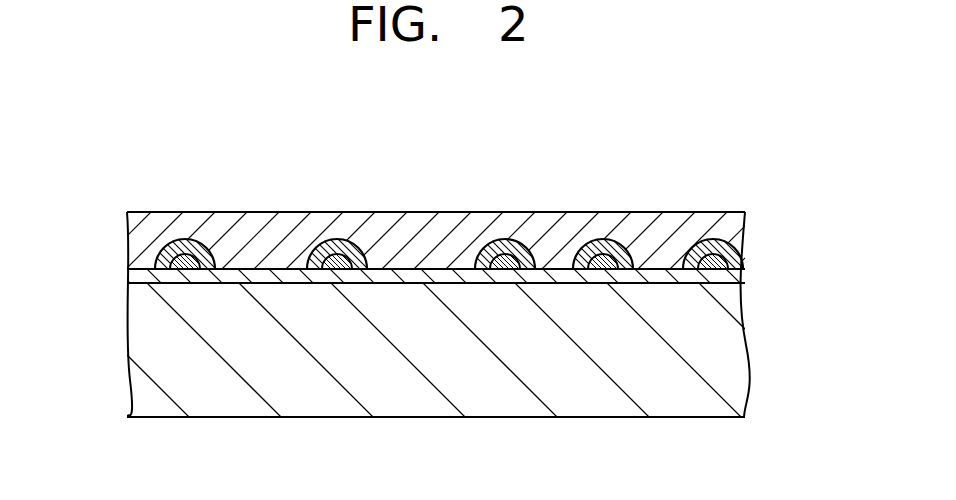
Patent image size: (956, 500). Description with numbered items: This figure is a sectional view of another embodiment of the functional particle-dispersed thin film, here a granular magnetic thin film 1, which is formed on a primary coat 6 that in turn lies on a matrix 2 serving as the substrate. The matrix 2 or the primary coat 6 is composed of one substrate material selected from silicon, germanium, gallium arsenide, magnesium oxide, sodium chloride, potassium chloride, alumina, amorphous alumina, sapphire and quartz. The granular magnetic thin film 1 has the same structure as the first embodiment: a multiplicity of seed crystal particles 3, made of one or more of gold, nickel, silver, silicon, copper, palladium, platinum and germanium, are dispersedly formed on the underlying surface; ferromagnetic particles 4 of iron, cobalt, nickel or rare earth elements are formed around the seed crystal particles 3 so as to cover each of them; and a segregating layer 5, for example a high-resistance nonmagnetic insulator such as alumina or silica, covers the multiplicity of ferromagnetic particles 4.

The granular magnetic thin film 1 is at (763, 208).
The matrix 2 is at (728, 368).
The seed crystal particles 3 is at (188, 262).
The ferromagnetic particles 4 is at (186, 238).
The segregating layer 5 is at (478, 230).
The primary coat 6 is at (733, 273).